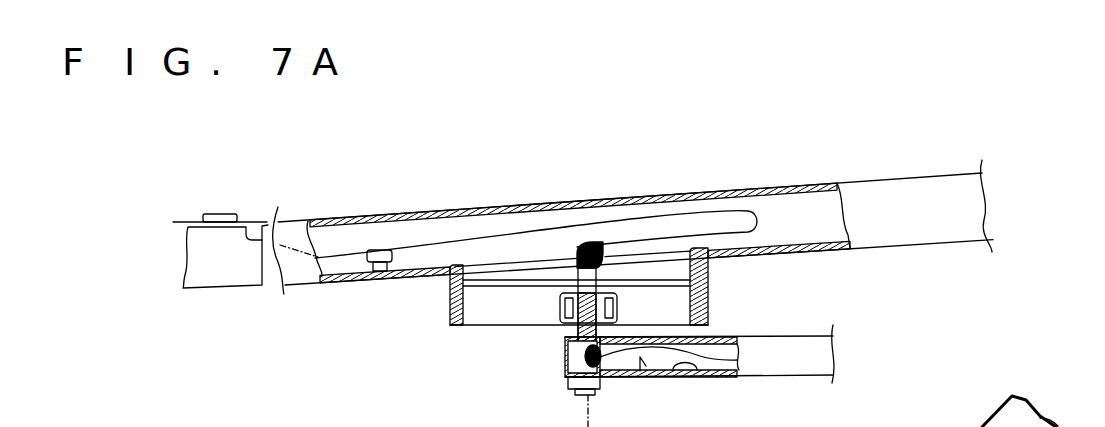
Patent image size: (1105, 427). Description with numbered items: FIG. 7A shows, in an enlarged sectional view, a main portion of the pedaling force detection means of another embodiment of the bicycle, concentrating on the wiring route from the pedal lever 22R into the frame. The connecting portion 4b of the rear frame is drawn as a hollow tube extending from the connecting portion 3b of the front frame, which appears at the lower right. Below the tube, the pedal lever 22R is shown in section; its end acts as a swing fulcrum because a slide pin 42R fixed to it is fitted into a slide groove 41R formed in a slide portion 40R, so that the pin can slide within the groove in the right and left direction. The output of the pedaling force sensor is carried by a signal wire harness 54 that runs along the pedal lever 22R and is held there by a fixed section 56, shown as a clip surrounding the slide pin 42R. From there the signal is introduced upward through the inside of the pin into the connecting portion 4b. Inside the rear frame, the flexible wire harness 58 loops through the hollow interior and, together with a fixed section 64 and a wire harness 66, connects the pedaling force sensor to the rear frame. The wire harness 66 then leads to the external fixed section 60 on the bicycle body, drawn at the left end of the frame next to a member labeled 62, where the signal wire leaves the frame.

The connecting portion 4b is at (986, 206).
The wire harness 66 is at (333, 278).
The flexible wire harness 58 is at (683, 212).
The fixed section 64 is at (379, 250).
The panel 62 is at (173, 220).
The fixed section 60 is at (236, 212).
The slide portion 40R is at (452, 303).
The slide groove 41R is at (708, 305).
The slide pin 42R is at (578, 388).
The fixed section 56 is at (540, 306).
The pedal lever 22R is at (836, 357).
The signal wire harness 54 is at (641, 372).
The connecting portion 3b is at (1026, 398).